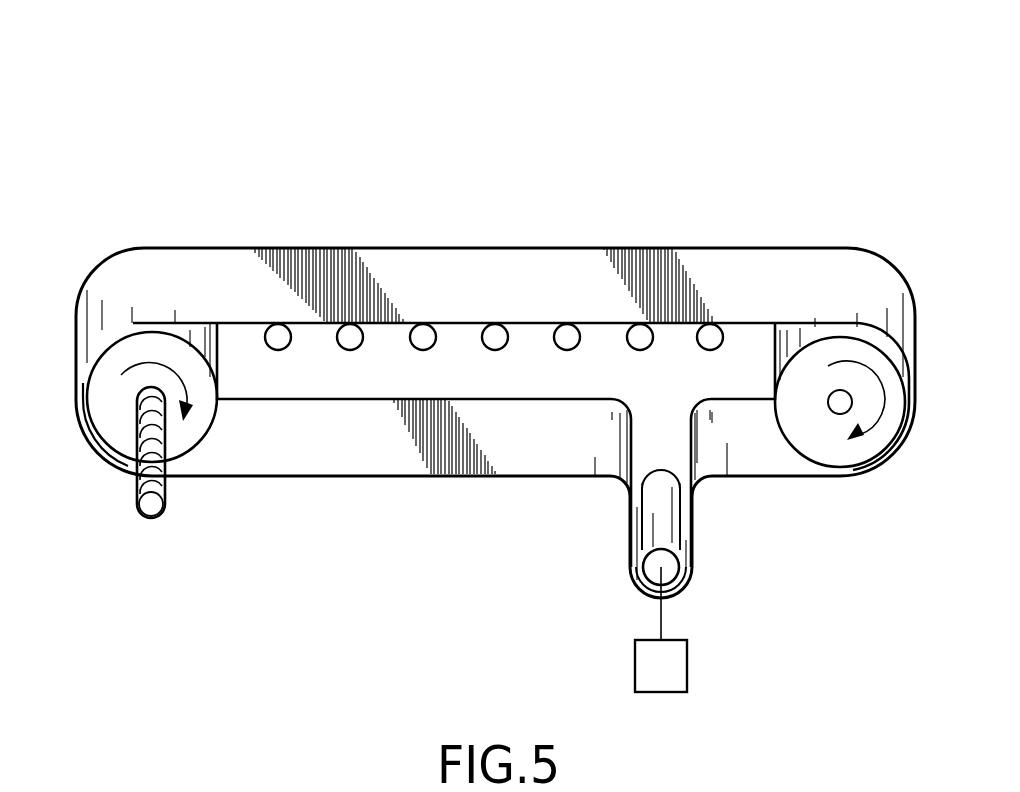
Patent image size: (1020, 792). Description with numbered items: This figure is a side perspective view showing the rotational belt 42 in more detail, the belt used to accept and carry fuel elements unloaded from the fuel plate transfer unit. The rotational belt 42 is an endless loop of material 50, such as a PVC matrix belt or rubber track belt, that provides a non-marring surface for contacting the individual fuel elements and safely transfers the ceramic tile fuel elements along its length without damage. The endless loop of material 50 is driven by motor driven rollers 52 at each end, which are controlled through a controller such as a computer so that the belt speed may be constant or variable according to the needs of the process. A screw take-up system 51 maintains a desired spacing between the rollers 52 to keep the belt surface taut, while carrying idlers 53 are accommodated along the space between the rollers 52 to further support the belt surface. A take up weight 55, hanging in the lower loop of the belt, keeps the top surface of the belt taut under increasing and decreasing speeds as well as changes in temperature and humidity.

The rotational belt 42 is at (495, 310).
The endless loop of material 50 is at (453, 248).
The screw take-up system 51 is at (135, 487).
The motor driven rollers 52 is at (208, 435).
The carrying idlers 53 is at (568, 327).
The take up weight 55 is at (687, 666).